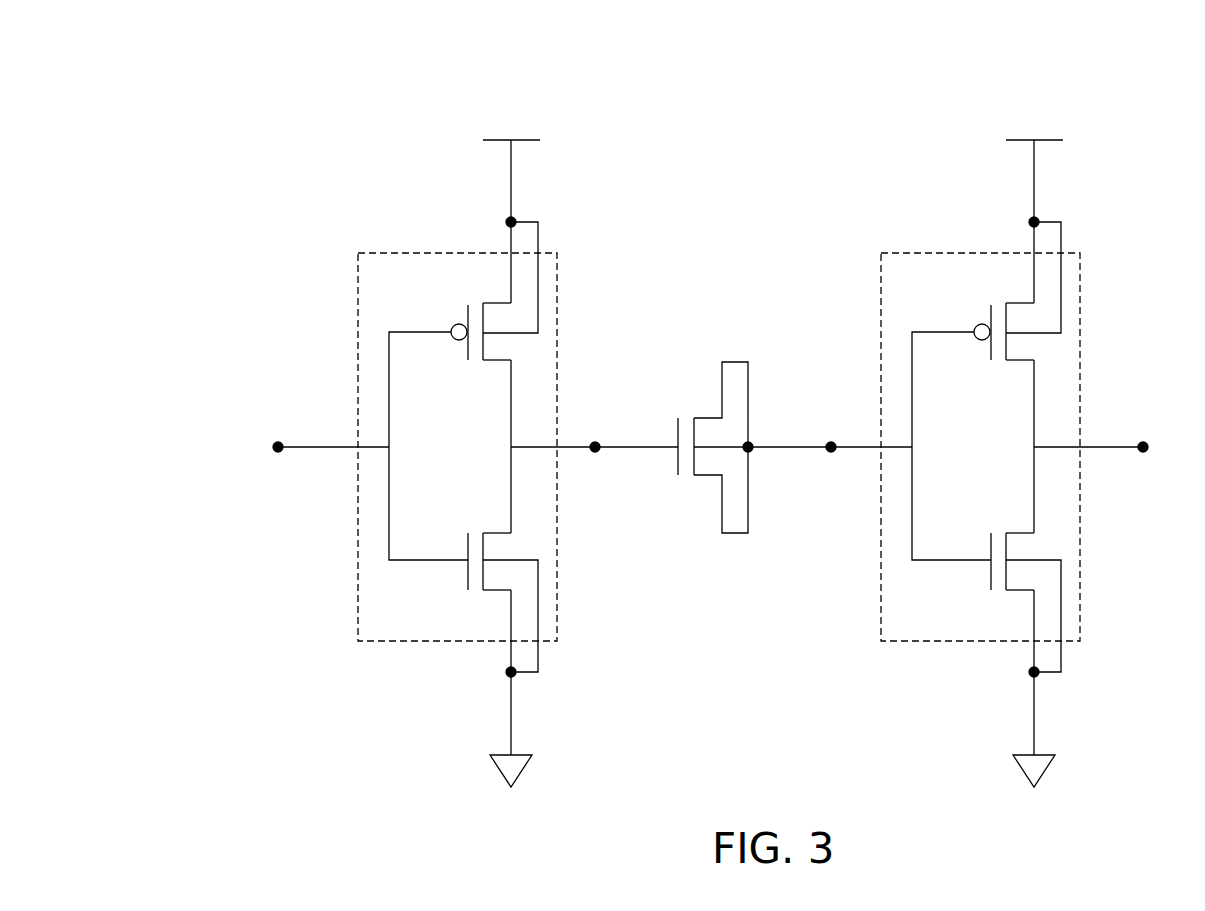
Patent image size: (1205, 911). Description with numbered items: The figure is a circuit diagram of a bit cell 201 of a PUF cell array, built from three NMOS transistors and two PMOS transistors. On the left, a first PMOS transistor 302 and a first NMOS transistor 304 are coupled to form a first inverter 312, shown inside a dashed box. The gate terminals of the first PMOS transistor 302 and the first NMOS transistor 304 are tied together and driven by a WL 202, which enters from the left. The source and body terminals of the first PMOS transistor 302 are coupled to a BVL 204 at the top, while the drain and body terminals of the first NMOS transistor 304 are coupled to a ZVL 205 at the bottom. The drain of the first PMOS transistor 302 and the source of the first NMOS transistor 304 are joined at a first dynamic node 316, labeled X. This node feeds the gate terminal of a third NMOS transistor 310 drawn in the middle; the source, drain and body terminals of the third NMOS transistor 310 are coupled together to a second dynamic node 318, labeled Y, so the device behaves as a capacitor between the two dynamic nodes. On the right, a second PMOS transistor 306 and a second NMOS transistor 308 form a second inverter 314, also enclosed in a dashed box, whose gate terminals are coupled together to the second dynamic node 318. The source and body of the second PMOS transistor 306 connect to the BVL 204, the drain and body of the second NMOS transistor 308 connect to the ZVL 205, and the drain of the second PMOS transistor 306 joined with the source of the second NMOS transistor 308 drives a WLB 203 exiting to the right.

The bit cell 201 is at (262, 88).
The WL 202 is at (308, 448).
The WLB 203 is at (1115, 448).
The BVL 204 is at (500, 138).
The ZVL 205 is at (500, 772).
The first PMOS transistor M1 302 is at (464, 396).
The first NMOS transistor M2 304 is at (464, 626).
The second PMOS transistor M3 306 is at (987, 396).
The second NMOS transistor M4 308 is at (987, 626).
The third NMOS transistor M5 310 is at (794, 434).
The first inverter 312 is at (400, 252).
The second inverter 314 is at (923, 252).
The first dynamic node 316 is at (595, 453).
The second dynamic node 318 is at (831, 453).